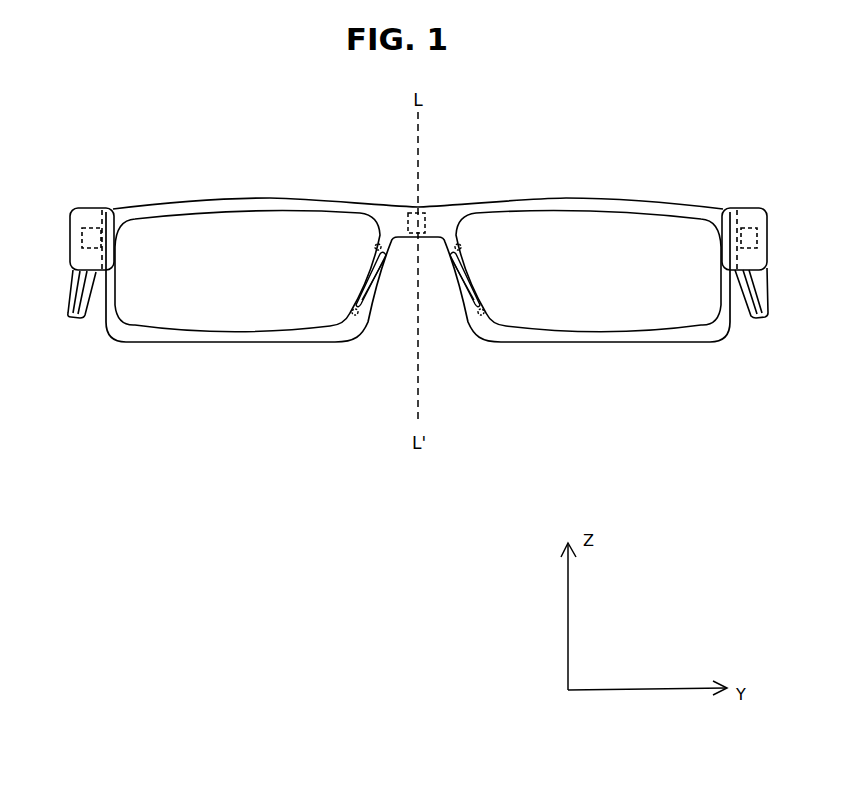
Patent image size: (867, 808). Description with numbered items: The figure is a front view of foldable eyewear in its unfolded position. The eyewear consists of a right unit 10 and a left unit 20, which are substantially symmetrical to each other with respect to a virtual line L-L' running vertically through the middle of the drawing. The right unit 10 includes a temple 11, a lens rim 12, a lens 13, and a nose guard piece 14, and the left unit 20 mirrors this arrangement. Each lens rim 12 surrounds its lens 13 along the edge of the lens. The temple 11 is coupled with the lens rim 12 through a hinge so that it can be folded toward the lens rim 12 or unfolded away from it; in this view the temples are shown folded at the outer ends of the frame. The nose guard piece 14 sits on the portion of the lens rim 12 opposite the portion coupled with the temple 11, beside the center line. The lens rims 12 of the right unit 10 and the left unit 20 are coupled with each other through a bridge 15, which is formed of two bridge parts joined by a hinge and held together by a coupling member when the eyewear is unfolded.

The right unit 10 is at (227, 289).
The temple 11 is at (77, 212).
The lens rim 12 is at (212, 204).
The lens 13 is at (248, 258).
The nose guard piece 14 is at (358, 308).
The bridge 15 is at (433, 207).
The left unit 20 is at (623, 349).